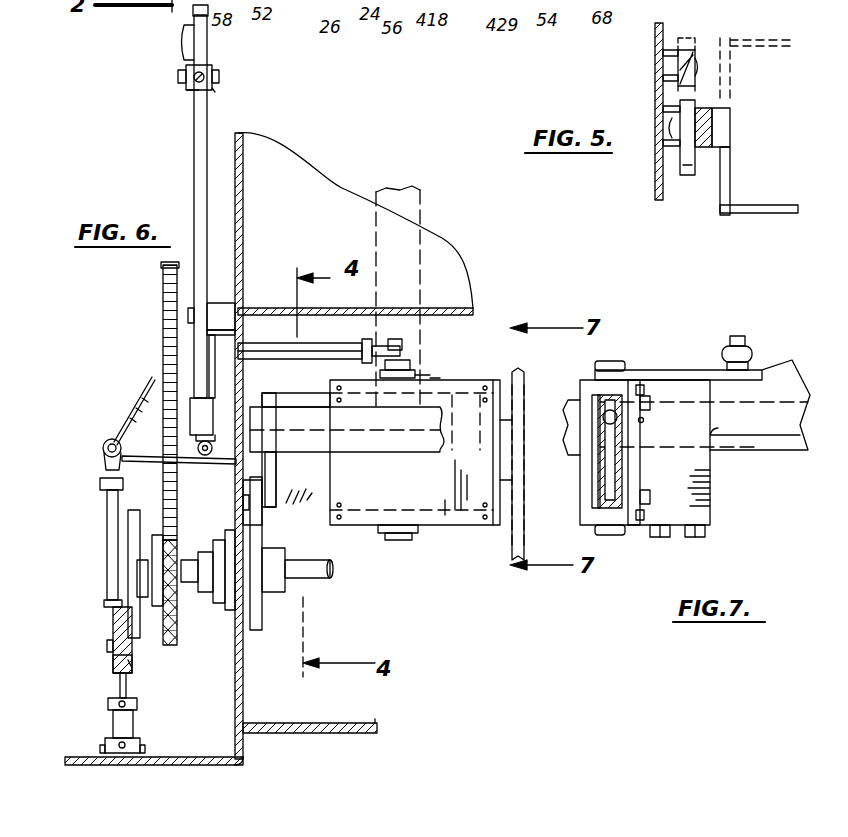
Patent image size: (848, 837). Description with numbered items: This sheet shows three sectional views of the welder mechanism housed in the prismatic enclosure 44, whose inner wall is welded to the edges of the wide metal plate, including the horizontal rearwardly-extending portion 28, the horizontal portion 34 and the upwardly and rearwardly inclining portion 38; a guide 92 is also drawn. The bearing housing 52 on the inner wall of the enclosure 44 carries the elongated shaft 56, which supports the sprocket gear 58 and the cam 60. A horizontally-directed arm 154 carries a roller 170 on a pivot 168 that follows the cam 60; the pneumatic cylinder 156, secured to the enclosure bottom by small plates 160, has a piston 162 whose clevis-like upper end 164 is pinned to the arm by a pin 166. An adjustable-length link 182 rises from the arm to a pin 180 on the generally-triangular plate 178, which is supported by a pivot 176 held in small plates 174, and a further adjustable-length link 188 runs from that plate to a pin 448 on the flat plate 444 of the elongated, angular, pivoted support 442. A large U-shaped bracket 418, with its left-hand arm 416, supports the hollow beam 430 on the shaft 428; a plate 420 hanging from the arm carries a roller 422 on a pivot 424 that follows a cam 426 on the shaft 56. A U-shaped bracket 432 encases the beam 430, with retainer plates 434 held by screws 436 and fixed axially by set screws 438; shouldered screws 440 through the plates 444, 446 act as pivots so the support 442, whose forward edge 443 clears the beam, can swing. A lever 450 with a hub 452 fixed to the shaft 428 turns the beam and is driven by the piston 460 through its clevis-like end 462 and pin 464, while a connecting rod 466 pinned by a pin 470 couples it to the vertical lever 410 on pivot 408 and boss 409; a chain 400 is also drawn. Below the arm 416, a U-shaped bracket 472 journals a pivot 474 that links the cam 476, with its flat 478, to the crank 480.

In FIG. 6, the horizontally-directed, rearwardly-extending portion 28 is at (320, 723).
In FIG. 6, the horizontally-directed portion 34 is at (465, 306).
In FIG. 6, the upwardly and rearwardly inclining portion 38 is at (338, 190).
In FIG. 6, the prismatic enclosure 44 is at (241, 158).
In FIG. 5, the prismatic enclosure 44 is at (652, 180).
In FIG. 6, the bearing housing 52 is at (220, 612).
In FIG. 6, the elongated shaft 56 is at (316, 580).
In FIG. 6, the sprocket gear 58 is at (157, 607).
In FIG. 6, the cam 60 is at (128, 530).
In FIG. 6, the guide 92 is at (420, 192).
In FIG. 6, the arm 154 is at (118, 632).
In FIG. 6, the pneumatic cylinder 156 is at (108, 716).
In FIG. 6, the small plates 160 is at (100, 747).
In FIG. 6, the piston 162 is at (120, 688).
In FIG. 6, the clevis-like upper end 164 is at (113, 665).
In FIG. 6, the pin 166 is at (107, 646).
In FIG. 6, the pivot 168 is at (142, 598).
In FIG. 6, the roller 170 is at (130, 668).
In FIG. 6, the small plates 174 is at (215, 465).
In FIG. 6, the pivot 176 is at (198, 448).
In FIG. 6, the generally-triangular plate 178 is at (135, 400).
In FIG. 6, the pin 180 is at (103, 448).
In FIG. 6, the adjustable-length link 182 is at (107, 492).
In FIG. 6, the adjustable-length link 188 is at (280, 352).
In FIG. 7, the adjustable-length link 188 is at (752, 350).
In FIG. 6, the chain 400 is at (161, 275).
In FIG. 6, the pivot 408 is at (188, 316).
In FIG. 6, the boss 409 is at (218, 305).
In FIG. 6, the lever 410 is at (194, 12).
In FIG. 5, the left-hand arm 416 is at (695, 48).
In FIG. 7, the left-hand arm 416 is at (572, 396).
In FIG. 6, the U-shaped bracket 418 is at (288, 400).
In FIG. 6, the plate 420 is at (276, 470).
In FIG. 6, the roller 422 is at (243, 492).
In FIG. 6, the pivot 424 is at (243, 505).
In FIG. 6, the cam 426 is at (256, 632).
In FIG. 6, the shaft 428 is at (243, 402).
In FIG. 7, the shaft 428 is at (606, 428).
In FIG. 6, the hollow beam 430 is at (520, 372).
In FIG. 7, the hollow beam 430 is at (600, 478).
In FIG. 6, the U-shaped bracket 432 is at (465, 527).
In FIG. 7, the U-shaped bracket 432 is at (588, 500).
In FIG. 6, the retainer plates 434 is at (352, 527).
In FIG. 7, the retainer plates 434 is at (712, 465).
In FIG. 6, the screws 436 is at (495, 382).
In FIG. 7, the screws 436 is at (636, 380).
In FIG. 6, the set screws 438 is at (500, 432).
In FIG. 7, the set screws 438 is at (650, 398).
In FIG. 6, the shouldered screws 440 is at (365, 350).
In FIG. 7, the shouldered screws 440 is at (613, 361).
In FIG. 6, the pivoted support 442 is at (425, 372).
In FIG. 7, the pivoted support 442 is at (716, 460).
In FIG. 7, the forward edge 443 is at (645, 421).
In FIG. 6, the flat plate 444 is at (415, 375).
In FIG. 7, the flat plate 444 is at (715, 368).
In FIG. 6, the flat plate 446 is at (385, 540).
In FIG. 7, the flat plate 446 is at (680, 540).
In FIG. 6, the pin 448 is at (392, 340).
In FIG. 7, the pin 448 is at (740, 336).
In FIG. 6, the lever 450 is at (194, 153).
In FIG. 6, the hub 452 is at (190, 407).
In FIG. 6, the piston 460 is at (187, 92).
In FIG. 6, the clevis-like outer end 462 is at (215, 92).
In FIG. 6, the pin 464 is at (220, 76).
In FIG. 6, the connecting rod 466 is at (185, 63).
In FIG. 6, the pin 470 is at (183, 45).
In FIG. 5, the U-shaped bracket 472 is at (665, 140).
In FIG. 5, the pivot 474 is at (670, 128).
In FIG. 5, the cam 476 is at (687, 178).
In FIG. 5, the flat 478 is at (700, 150).
In FIG. 5, the crank 480 is at (732, 70).